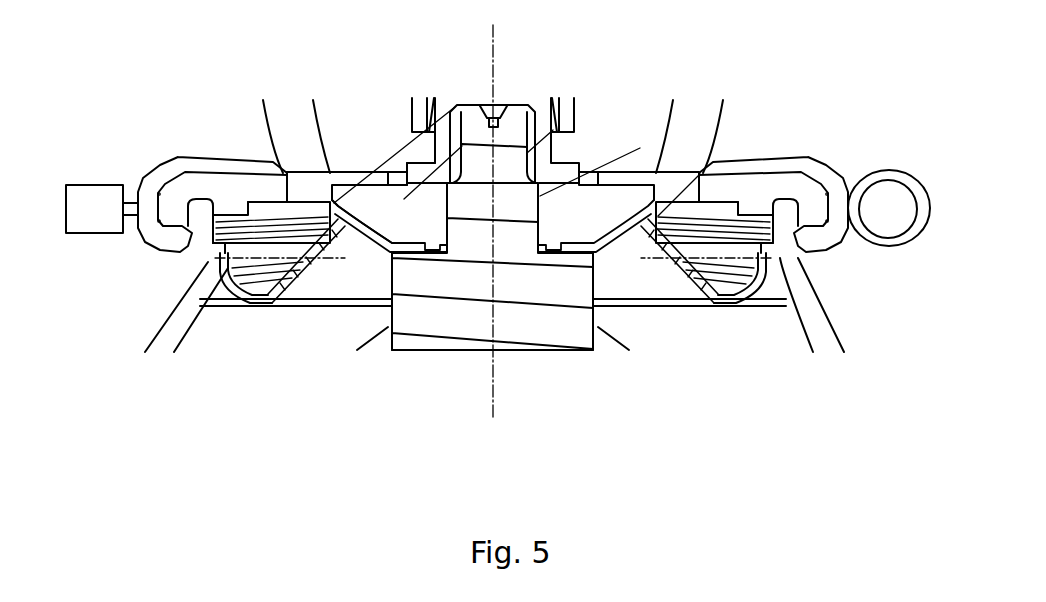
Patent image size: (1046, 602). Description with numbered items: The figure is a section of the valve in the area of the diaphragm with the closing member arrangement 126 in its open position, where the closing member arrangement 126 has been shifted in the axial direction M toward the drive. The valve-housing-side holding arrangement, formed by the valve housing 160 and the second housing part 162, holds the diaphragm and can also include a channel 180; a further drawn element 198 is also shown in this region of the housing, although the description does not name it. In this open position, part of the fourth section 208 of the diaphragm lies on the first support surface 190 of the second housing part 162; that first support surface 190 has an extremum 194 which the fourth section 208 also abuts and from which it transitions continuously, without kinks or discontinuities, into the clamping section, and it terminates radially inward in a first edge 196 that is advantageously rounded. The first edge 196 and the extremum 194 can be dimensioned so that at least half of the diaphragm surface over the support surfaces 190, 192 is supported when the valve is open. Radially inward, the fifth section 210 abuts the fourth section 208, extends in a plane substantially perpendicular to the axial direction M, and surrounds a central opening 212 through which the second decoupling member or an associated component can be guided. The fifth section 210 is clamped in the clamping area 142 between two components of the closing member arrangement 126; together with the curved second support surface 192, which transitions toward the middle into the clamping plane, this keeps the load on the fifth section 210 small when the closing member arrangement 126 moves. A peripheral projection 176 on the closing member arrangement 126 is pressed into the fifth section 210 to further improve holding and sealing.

The axial direction M is at (493, 52).
The closing member arrangement 126 is at (537, 361).
The clamping area 142 is at (577, 232).
The valve housing 160 is at (150, 339).
The second housing part 162 is at (250, 200).
The peripheral projection 176 is at (423, 262).
The channel 180 is at (345, 220).
The first support surface 190 is at (690, 280).
The second support surface 192 is at (327, 252).
The extremum 194 is at (730, 308).
The first edge 196 is at (655, 257).
The flange 198 is at (332, 200).
The fourth section 208 is at (290, 303).
The fifth section 210 is at (543, 257).
The central opening 212 is at (215, 258).